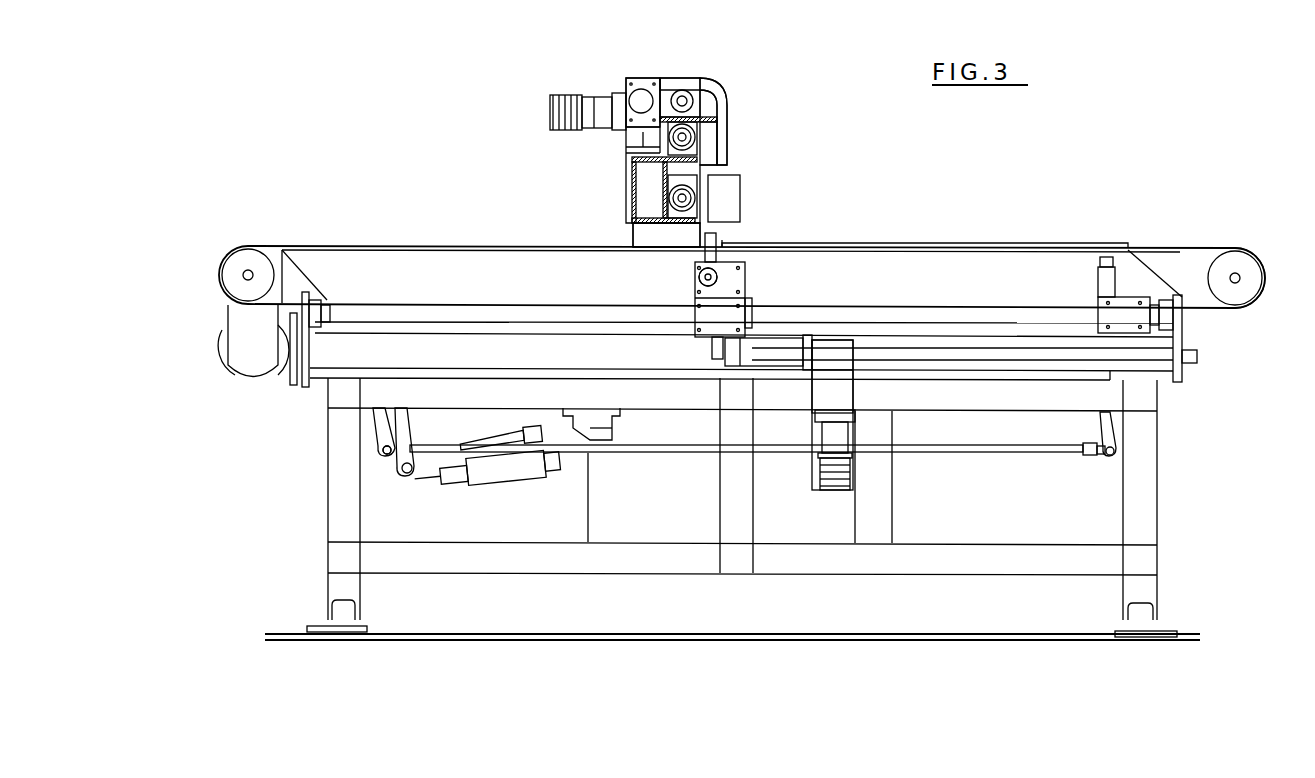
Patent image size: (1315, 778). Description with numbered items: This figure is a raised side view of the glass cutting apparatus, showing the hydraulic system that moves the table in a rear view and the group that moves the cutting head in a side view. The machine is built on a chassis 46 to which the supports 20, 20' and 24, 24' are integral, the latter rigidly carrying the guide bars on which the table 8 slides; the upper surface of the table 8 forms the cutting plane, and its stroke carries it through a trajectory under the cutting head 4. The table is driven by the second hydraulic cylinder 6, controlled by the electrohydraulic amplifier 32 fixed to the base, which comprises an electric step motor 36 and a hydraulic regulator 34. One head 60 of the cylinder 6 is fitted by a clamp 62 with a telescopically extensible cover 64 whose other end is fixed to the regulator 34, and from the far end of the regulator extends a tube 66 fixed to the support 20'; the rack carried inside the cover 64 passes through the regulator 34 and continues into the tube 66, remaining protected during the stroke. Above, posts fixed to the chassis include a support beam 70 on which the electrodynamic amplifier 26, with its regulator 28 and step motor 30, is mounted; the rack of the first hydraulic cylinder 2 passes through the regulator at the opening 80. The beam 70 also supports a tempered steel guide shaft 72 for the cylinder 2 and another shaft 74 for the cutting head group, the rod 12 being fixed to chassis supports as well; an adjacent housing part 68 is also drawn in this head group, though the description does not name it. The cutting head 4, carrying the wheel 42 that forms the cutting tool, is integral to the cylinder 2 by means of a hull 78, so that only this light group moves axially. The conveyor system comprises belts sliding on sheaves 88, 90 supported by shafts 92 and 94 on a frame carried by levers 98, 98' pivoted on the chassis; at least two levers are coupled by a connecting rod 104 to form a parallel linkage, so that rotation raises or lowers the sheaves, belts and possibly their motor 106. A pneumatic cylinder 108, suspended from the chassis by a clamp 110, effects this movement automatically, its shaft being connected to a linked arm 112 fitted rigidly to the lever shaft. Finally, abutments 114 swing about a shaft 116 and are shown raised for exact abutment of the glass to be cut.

The first hydraulic cylinder 2 is at (698, 100).
The cutting head 4 is at (740, 197).
The second hydraulic cylinder 6 is at (913, 302).
The table 8 is at (972, 244).
The rod 12 is at (682, 90).
The support 20 is at (268, 364).
The support 24 is at (1219, 338).
The support 20' is at (1219, 338).
The support 24' is at (268, 364).
The electrodynamic amplifier 26 is at (610, 146).
The regulator 28 is at (620, 103).
The step motor 30 is at (560, 95).
The electrohydraulic amplifier 32 is at (805, 430).
The regulator 34 is at (848, 395).
The step motor 36 is at (835, 473).
The wheel 42 is at (722, 238).
The chassis 46 is at (737, 523).
The head 60 is at (700, 322).
The clamp 62 is at (712, 345).
The telescopically extensible cover 64 is at (780, 348).
The tube 66 is at (970, 348).
The housing 68 is at (667, 233).
The support beam 70 is at (663, 167).
The guide shaft 72 is at (697, 138).
The shaft 74 is at (700, 206).
The hull 78 is at (717, 123).
The opening 80 is at (641, 89).
The sheave 88 is at (455, 247).
The sheave 90 is at (1250, 283).
The shaft 92 is at (248, 272).
The shaft 94 is at (1236, 276).
The lever 98 is at (329, 463).
The lever 98' is at (1075, 434).
The connecting rod 104 is at (694, 453).
The motor 106 is at (243, 344).
The pneumatic cylinder 108 is at (516, 466).
The clamp 110 is at (590, 435).
The lever 112 is at (405, 437).
The abutment 114 is at (706, 252).
The shaft 116 is at (718, 278).